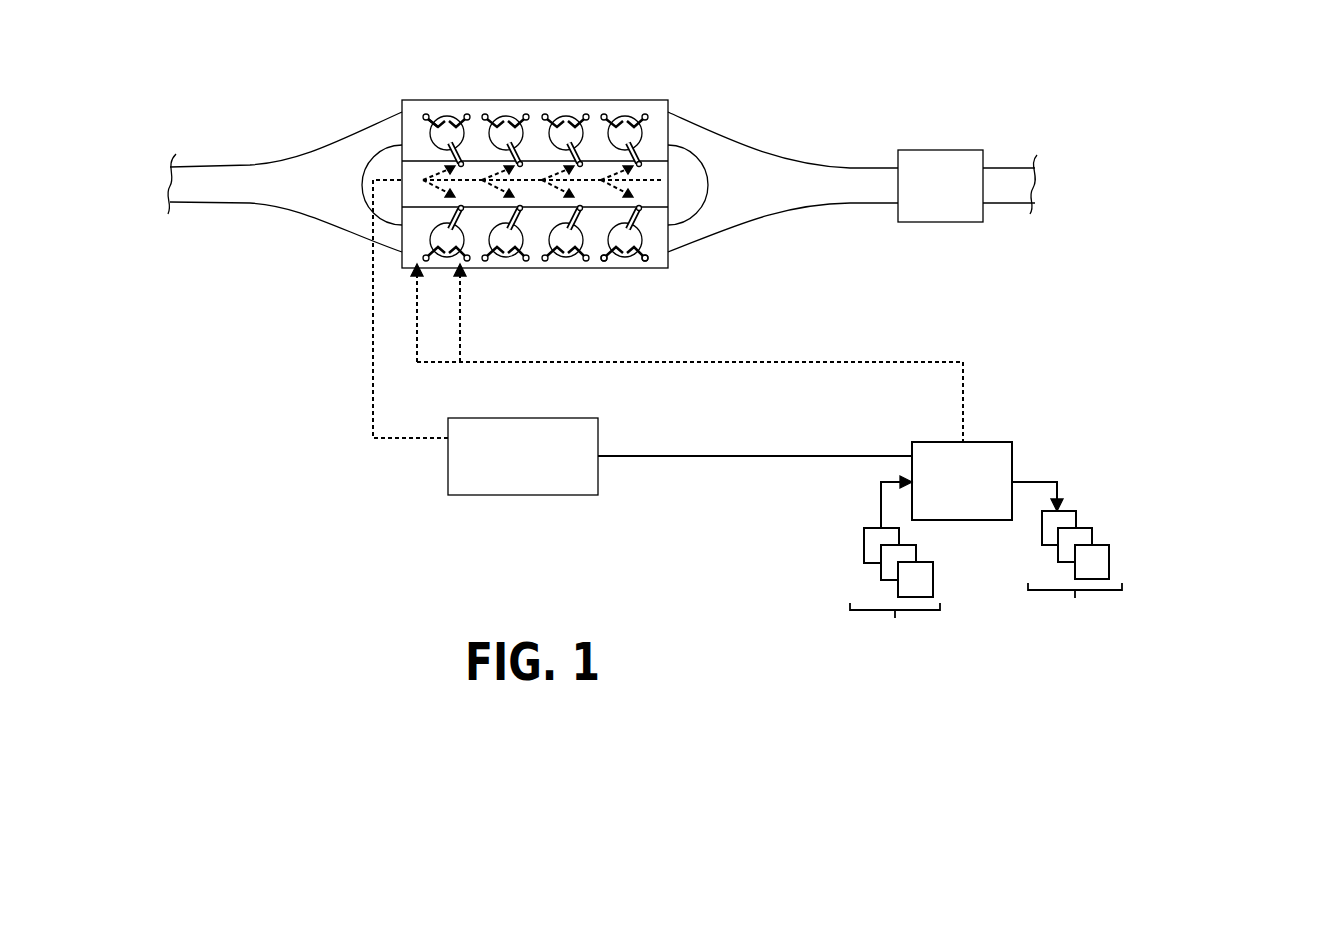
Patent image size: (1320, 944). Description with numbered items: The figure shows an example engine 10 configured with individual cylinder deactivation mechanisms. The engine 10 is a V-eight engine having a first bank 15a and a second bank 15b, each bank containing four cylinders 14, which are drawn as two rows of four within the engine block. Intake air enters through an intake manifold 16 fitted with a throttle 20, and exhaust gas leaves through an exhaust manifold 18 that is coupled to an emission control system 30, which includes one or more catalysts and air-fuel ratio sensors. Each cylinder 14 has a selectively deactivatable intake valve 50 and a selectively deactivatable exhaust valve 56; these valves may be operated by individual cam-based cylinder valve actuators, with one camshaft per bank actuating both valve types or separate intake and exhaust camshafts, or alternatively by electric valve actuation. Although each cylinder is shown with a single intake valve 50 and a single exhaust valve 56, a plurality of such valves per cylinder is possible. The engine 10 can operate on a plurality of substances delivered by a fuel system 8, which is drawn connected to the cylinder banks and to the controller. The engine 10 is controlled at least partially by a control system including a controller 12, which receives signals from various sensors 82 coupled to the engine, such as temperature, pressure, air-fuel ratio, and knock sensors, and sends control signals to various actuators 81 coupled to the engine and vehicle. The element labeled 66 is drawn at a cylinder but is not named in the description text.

The fuel system 8 is at (668, 337).
The engine 10 is at (670, 72).
The controller 12 is at (962, 481).
The cylinders 14 is at (647, 133).
The first bank 15a is at (453, 100).
The second bank 15b is at (468, 270).
The intake manifold 16 is at (276, 158).
The exhaust manifold 18 is at (735, 153).
The throttle 20 is at (242, 182).
The emission control system 30 is at (942, 150).
The intake valves 50 is at (601, 263).
The exhaust valves 56 is at (633, 262).
The fuel injector 66 is at (453, 150).
The actuators 81 is at (1067, 564).
The sensors 82 is at (895, 571).